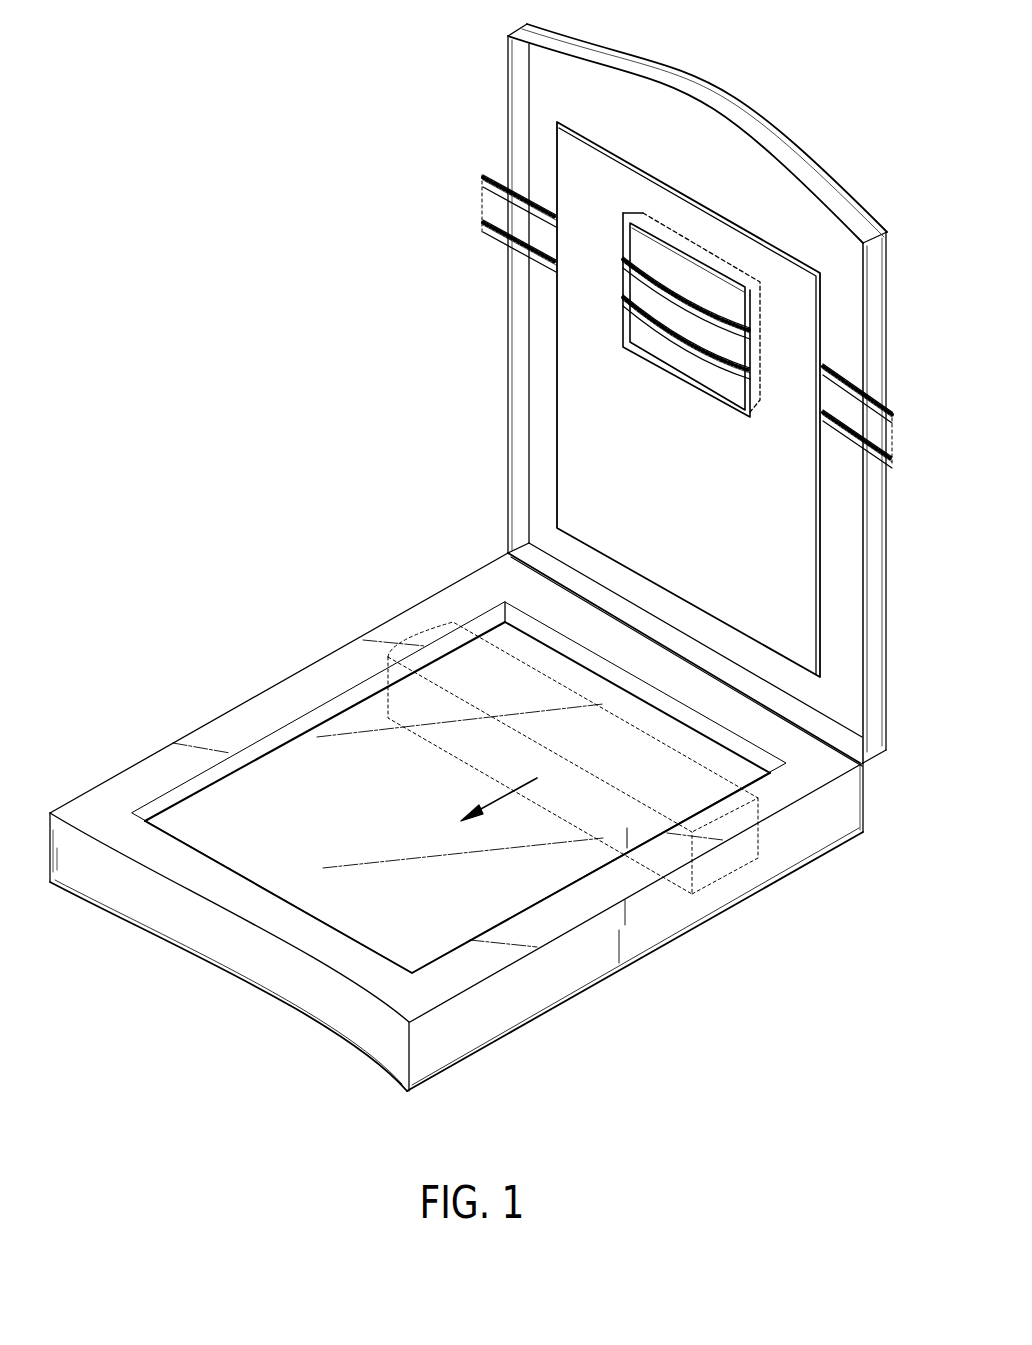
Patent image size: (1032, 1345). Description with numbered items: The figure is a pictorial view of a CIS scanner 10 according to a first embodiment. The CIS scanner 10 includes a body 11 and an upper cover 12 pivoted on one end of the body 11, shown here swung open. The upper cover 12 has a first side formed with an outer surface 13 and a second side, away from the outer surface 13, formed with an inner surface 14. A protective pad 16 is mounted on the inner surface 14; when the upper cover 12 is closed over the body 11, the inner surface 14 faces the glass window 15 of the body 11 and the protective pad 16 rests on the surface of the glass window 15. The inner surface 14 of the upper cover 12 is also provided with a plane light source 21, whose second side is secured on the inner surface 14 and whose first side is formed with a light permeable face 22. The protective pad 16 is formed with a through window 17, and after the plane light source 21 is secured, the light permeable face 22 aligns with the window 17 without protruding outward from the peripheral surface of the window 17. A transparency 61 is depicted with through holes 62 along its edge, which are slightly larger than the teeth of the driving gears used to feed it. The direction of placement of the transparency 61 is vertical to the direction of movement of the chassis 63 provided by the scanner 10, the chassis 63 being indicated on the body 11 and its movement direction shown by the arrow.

The CIS scanner 10 is at (897, 827).
The body 11 is at (828, 820).
The upper cover 12 is at (695, 427).
The outer surface 13 is at (888, 272).
The inner surface 14 is at (550, 108).
The glass window 15 is at (290, 762).
The protective pad 16 is at (583, 445).
The window 17 is at (623, 323).
The plane light source 21 is at (696, 248).
The light permeable face 22 is at (640, 249).
The transparency 61 is at (880, 432).
The through hole 62 is at (857, 390).
The chassis 63 is at (627, 848).